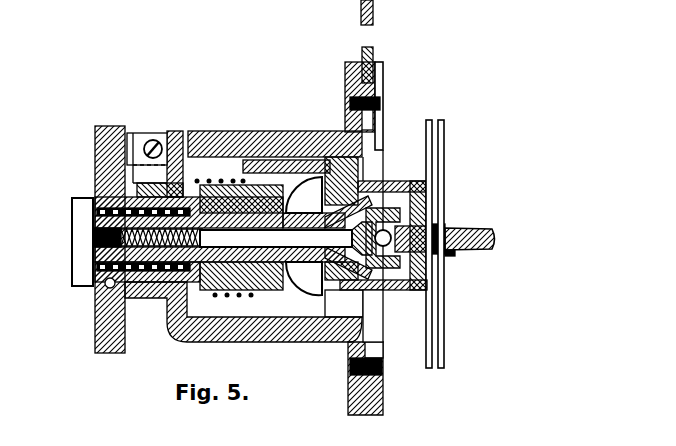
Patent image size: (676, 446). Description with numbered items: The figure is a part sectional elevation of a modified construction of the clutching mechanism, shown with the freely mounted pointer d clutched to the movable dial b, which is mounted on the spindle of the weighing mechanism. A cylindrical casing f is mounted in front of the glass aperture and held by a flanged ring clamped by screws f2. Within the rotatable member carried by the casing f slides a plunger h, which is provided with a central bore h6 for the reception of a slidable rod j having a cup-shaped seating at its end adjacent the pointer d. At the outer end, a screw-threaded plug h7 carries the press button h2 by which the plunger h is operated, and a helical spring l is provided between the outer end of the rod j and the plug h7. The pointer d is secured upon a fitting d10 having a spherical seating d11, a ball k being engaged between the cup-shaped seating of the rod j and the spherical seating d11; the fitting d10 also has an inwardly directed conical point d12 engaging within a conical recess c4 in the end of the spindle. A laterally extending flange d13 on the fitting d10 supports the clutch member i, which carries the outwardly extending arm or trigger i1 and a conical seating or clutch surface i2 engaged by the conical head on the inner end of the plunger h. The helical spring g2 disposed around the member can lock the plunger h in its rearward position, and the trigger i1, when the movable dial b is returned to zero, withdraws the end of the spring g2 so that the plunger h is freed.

The plunger h is at (185, 165).
The press button h2 is at (80, 205).
The central bore h6 is at (141, 180).
The screw-threaded plug h7 is at (95, 236).
The spring l is at (93, 246).
The slidable rod j is at (215, 198).
The helical spring g2 is at (253, 165).
The clutch member i is at (364, 150).
The arm or trigger i1 is at (289, 160).
The conical seating or clutch surface i2 is at (326, 157).
The lateral extending flange d13 is at (405, 190).
The fitting d10 is at (423, 208).
The spherical seating d11 is at (457, 240).
The conical point d12 is at (495, 232).
The conical recess c4 is at (455, 254).
The movable dial b is at (438, 290).
The pointer d is at (436, 326).
The ball k is at (410, 291).
The cylindrical casing f is at (183, 337).
The screws f2 is at (348, 368).